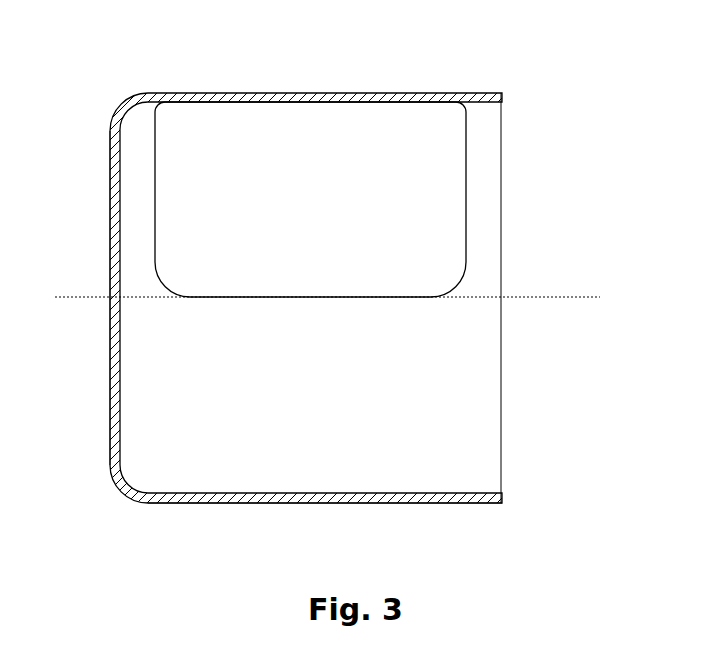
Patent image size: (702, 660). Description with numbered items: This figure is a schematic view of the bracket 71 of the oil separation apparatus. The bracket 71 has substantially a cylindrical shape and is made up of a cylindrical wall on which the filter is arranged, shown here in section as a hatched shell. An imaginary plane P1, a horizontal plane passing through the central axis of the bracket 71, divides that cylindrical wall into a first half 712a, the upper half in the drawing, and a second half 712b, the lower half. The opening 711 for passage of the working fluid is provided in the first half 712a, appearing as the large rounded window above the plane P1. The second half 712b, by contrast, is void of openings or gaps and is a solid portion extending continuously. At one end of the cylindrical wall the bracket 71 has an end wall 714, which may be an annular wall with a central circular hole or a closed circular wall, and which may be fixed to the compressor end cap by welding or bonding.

The bracket 71 is at (266, 295).
The opening 711 is at (400, 189).
The first half 712a is at (361, 93).
The second half 712b is at (355, 498).
The end wall 714 is at (116, 320).
The imaginary plane P1 is at (537, 297).